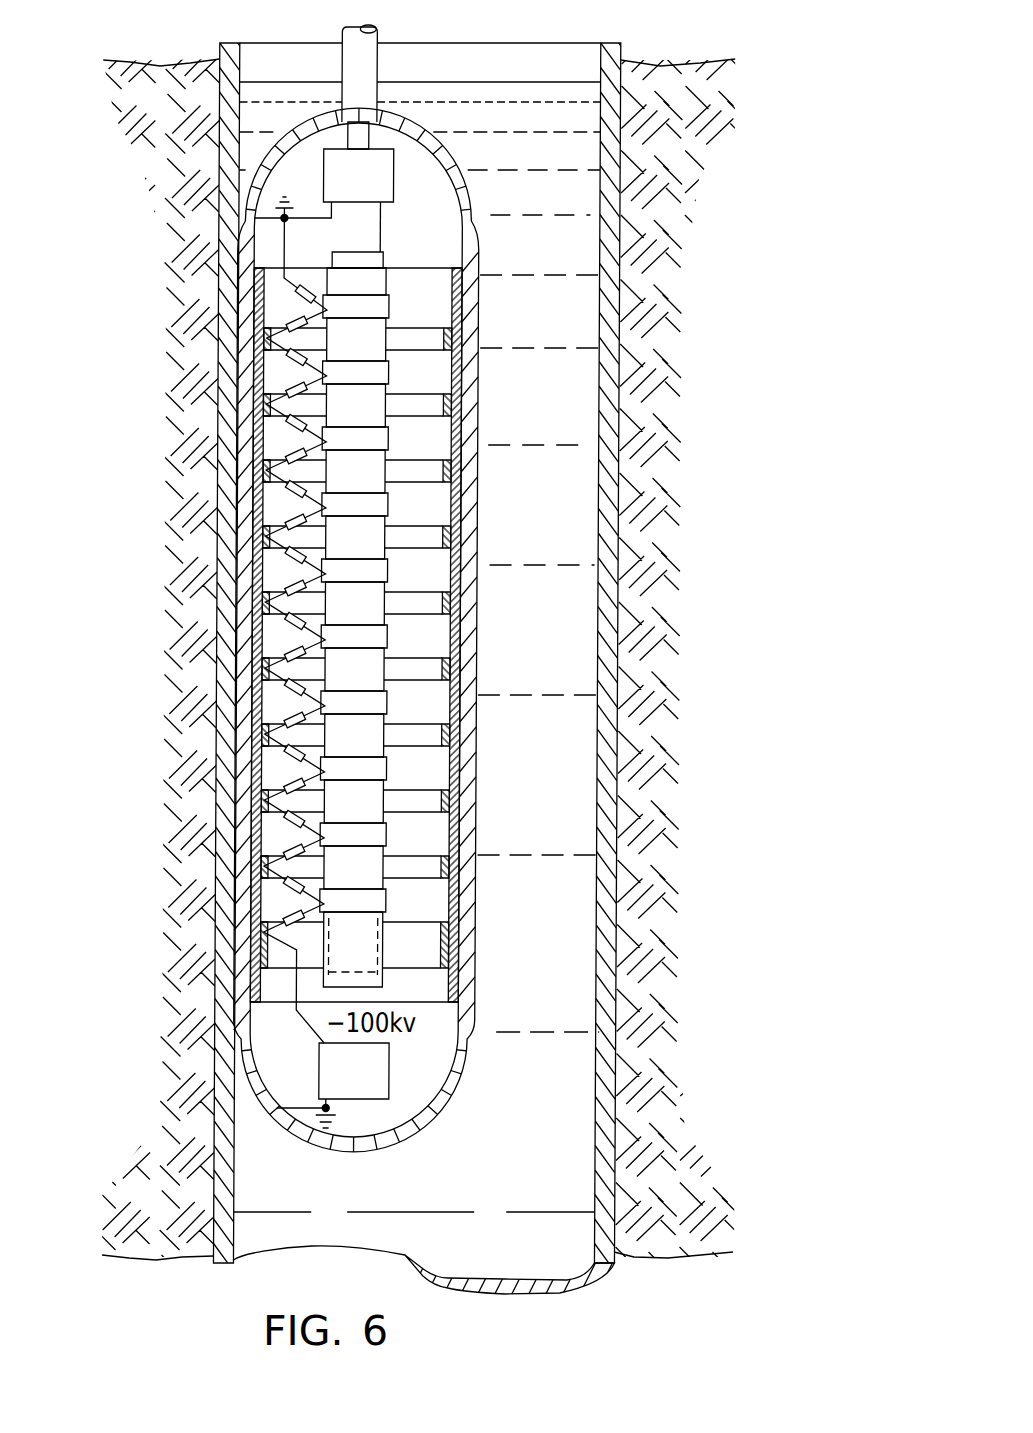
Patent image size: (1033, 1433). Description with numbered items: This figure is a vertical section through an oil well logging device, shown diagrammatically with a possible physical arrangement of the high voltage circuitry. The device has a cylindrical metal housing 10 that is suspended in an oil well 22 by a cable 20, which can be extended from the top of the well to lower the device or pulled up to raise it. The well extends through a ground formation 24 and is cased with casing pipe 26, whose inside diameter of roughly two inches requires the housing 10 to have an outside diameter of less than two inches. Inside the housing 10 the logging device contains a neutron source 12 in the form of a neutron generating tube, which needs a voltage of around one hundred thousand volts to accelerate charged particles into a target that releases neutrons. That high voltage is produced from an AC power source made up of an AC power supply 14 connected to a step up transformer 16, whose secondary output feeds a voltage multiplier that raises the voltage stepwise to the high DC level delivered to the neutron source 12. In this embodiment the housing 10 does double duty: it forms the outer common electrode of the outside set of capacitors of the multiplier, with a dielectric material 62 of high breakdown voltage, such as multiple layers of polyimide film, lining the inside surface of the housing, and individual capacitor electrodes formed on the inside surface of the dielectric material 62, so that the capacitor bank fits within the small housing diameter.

The housing 10 is at (473, 310).
The neutron source 12 is at (382, 1083).
The AC power supply 14 is at (369, 135).
The step up transformer 16 is at (380, 182).
The cable 20 is at (378, 31).
The oil well 22 is at (570, 385).
The ground formation 24 is at (660, 512).
The casing pipe 26 is at (612, 435).
The dielectric material 62 is at (459, 507).